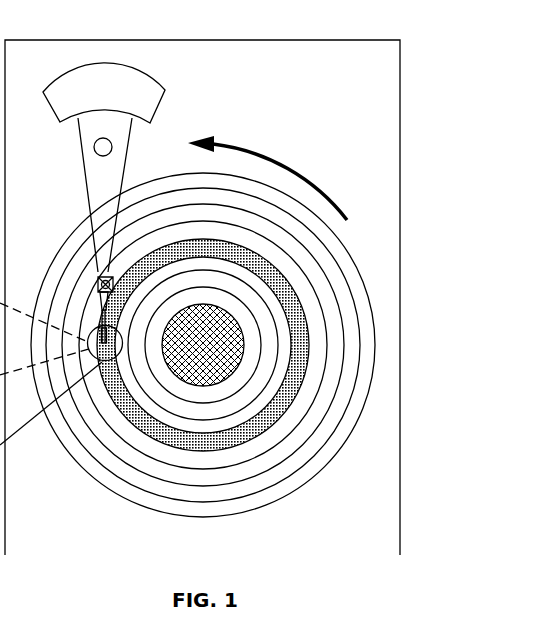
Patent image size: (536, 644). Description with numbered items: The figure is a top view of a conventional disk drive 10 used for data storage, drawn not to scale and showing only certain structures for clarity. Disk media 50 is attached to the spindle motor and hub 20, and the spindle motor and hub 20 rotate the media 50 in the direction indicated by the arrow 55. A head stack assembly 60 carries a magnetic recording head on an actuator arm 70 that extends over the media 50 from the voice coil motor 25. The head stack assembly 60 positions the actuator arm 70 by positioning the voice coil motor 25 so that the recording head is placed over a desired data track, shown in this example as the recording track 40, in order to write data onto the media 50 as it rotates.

The disk drive 10 is at (400, 130).
The spindle motor and hub 20 is at (203, 345).
The voice coil motor 25 is at (158, 84).
The recording track 40 is at (308, 343).
The disk media 50 is at (295, 488).
The arrow 55 is at (268, 152).
The head stack assembly 60 is at (95, 148).
The actuator arm 70 is at (100, 190).